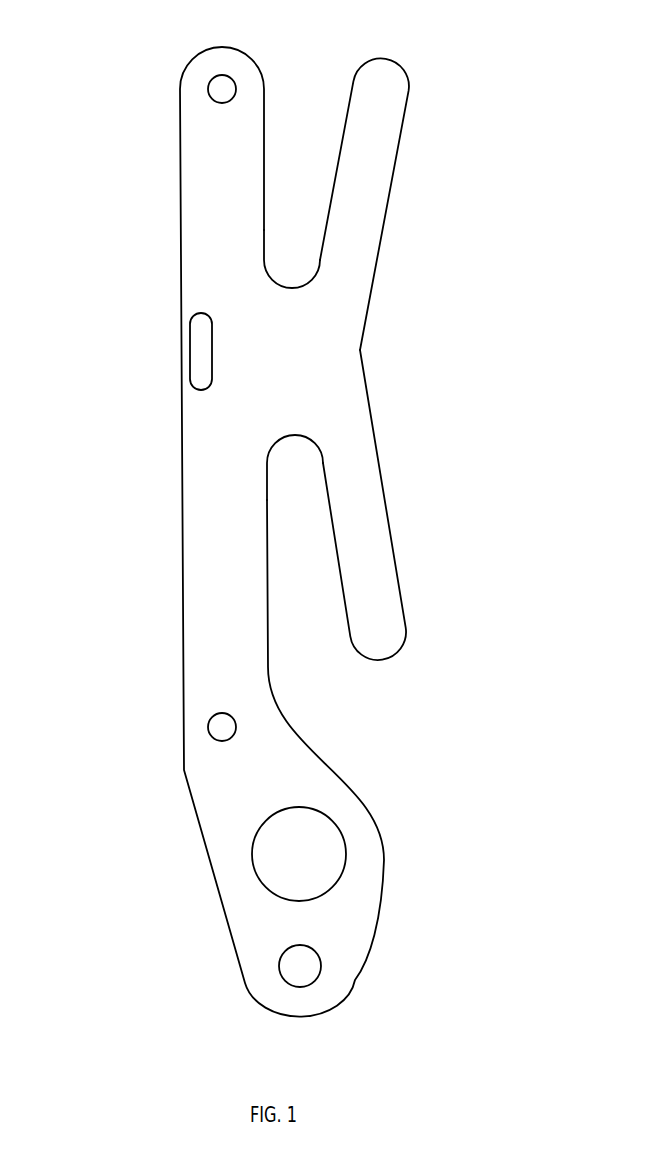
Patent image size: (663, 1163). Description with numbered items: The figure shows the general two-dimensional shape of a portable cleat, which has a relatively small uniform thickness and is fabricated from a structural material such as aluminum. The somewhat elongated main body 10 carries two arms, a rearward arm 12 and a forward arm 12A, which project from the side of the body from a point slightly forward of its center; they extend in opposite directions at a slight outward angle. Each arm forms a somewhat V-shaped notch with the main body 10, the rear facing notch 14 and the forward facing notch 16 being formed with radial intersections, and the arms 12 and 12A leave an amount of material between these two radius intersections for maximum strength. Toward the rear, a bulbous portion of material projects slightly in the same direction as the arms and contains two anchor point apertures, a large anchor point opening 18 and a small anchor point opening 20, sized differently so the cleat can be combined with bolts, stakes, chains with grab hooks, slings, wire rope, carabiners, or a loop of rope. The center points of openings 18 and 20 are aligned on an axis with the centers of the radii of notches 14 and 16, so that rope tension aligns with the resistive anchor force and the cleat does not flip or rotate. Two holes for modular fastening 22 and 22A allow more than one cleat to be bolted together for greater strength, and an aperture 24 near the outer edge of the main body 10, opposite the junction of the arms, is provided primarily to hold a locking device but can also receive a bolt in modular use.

The main body of the cleat 10 is at (217, 545).
The rearward arm 12 is at (373, 590).
The forward arm 12A is at (365, 163).
The rear facing notch 14 is at (288, 459).
The forward facing notch 16 is at (289, 265).
The large anchor point opening 18 is at (297, 847).
The small anchor point opening 20 is at (295, 960).
The hole for modular fastening 22 is at (222, 727).
The hole for modular fastening 22A is at (217, 88).
The aperture for locking device 24 is at (200, 343).